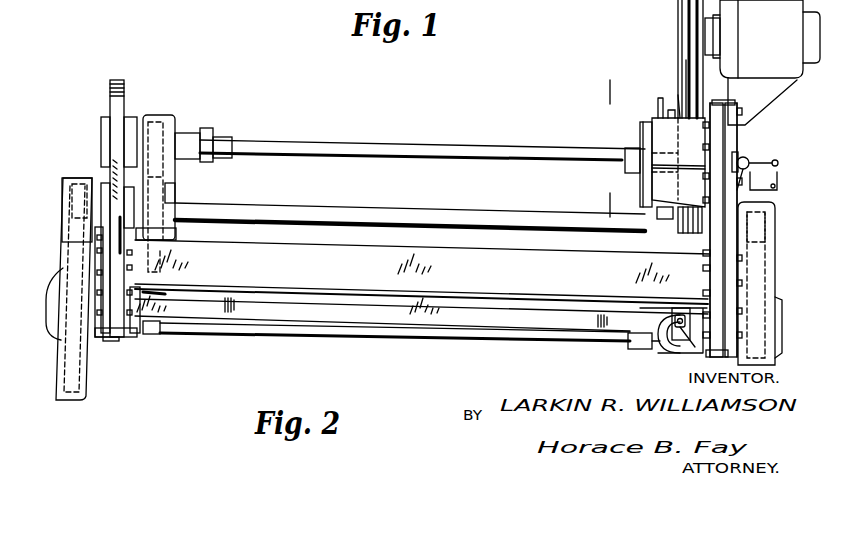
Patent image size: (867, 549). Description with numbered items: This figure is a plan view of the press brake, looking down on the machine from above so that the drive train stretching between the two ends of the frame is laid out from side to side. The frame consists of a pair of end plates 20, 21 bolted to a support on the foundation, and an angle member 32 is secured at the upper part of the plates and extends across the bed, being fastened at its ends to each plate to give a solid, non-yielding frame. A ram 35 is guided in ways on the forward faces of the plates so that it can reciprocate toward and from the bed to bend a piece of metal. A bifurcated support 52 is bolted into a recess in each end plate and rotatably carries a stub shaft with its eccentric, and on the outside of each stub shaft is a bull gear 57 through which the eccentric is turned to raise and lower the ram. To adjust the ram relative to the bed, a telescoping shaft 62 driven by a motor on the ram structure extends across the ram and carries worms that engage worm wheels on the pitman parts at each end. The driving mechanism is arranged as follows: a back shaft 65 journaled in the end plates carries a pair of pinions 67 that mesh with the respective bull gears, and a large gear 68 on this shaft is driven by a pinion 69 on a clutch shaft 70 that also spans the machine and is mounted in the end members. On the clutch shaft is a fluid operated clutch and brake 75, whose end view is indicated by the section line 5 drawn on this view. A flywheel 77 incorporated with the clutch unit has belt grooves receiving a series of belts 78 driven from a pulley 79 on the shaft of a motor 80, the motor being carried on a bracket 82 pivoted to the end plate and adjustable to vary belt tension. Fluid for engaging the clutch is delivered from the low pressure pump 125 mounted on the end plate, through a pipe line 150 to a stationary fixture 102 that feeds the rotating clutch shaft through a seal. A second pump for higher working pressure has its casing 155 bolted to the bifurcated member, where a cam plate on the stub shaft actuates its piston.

The section line 5— 5 is at (604, 92).
The end plate 20 is at (717, 302).
The end plate 21 is at (110, 104).
The angle member 32 is at (340, 267).
The ram 35 is at (343, 313).
The bifurcated support 52 is at (125, 337).
The bull gear 57 is at (78, 364).
The telescoping shaft 62 is at (450, 338).
The back shaft 65 is at (438, 212).
The pinion 67 is at (78, 184).
The large gear 68 is at (174, 178).
The pinion 69 is at (158, 116).
The clutch shaft 70 is at (441, 146).
The fluid operated clutch and brake 75 is at (636, 128).
The flywheel 77 is at (678, 98).
The belts 78 is at (682, 72).
The pulley 79 is at (678, 7).
The motor 80 is at (762, 39).
The bracket 82 is at (770, 98).
The stationary fixture 102 is at (763, 161).
The low pressure pump 125 is at (747, 158).
The pipe line 150 is at (778, 182).
The casing 155 is at (678, 310).